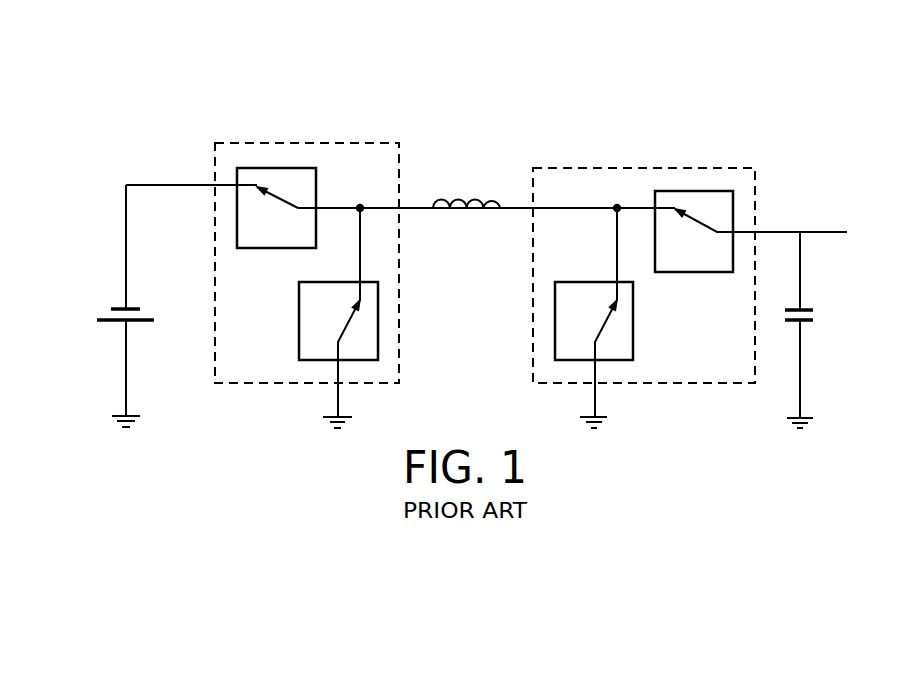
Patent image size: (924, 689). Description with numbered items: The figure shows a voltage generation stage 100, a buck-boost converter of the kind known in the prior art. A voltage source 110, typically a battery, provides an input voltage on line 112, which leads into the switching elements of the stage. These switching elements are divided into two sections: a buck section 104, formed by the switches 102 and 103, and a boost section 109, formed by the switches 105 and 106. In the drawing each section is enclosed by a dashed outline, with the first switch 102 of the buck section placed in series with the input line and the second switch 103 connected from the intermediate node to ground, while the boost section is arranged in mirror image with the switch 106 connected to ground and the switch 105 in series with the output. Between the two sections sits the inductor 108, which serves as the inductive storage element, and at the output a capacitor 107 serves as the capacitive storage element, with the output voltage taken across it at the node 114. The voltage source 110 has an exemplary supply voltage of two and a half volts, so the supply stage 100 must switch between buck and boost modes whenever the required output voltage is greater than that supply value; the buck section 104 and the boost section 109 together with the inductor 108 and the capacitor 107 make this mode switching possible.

The voltage generation stage 100 is at (817, 135).
The switch 102 is at (263, 167).
The switch 103 is at (379, 343).
The buck section 104 is at (373, 143).
The switch 105 is at (703, 190).
The switch 106 is at (555, 343).
The capacitor 107 is at (815, 315).
The inductor 108 is at (463, 197).
The boost section 109 is at (553, 168).
The voltage source 110 is at (107, 313).
The line 112 is at (172, 187).
The output voltage node Vout 114 is at (820, 230).